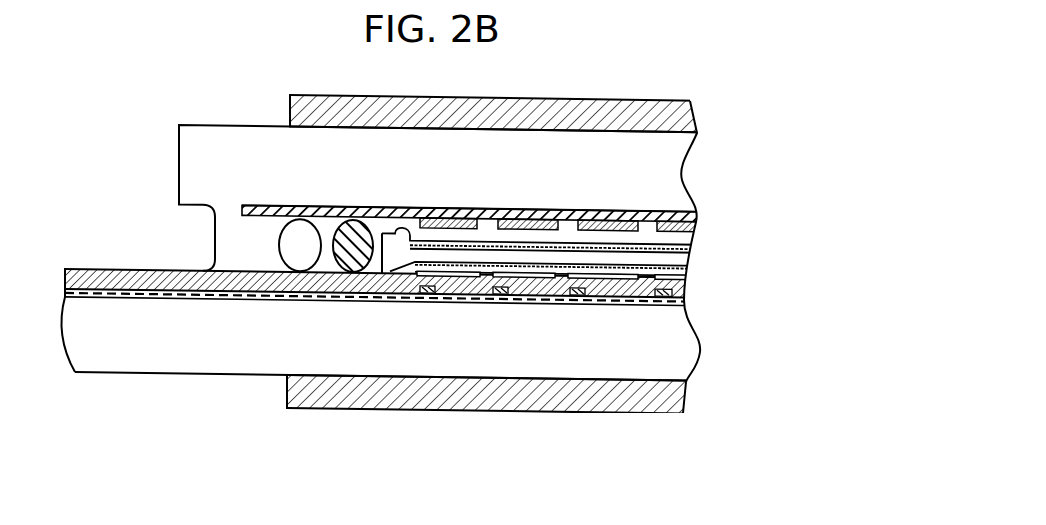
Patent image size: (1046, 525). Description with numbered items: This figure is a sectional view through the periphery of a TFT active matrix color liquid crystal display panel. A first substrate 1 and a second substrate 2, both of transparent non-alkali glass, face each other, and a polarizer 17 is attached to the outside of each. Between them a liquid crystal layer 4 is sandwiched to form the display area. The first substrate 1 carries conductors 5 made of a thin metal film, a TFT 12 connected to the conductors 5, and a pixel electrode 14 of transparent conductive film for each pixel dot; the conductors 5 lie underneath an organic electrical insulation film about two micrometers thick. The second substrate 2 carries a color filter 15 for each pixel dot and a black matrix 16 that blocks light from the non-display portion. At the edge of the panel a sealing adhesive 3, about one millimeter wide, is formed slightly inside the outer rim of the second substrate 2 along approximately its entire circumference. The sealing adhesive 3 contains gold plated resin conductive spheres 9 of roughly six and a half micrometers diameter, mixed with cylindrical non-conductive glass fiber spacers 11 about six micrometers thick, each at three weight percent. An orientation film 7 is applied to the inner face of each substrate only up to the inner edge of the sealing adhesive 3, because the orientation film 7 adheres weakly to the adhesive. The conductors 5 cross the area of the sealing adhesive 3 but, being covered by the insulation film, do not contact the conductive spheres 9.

The first substrate 1 is at (665, 355).
The second substrate 2 is at (213, 150).
The sealing adhesive 3 is at (325, 263).
The liquid crystal layer 4 is at (680, 255).
The conductor 5 is at (170, 300).
The orientation film 7 is at (693, 245).
The conductive sphere 9 is at (352, 256).
The glass fiber spacer 11 is at (303, 247).
The TFT 12 is at (682, 295).
The pixel electrode 14 is at (462, 297).
The color filter 15 is at (693, 228).
The black matrix 16 is at (655, 212).
The polarizer 17 is at (690, 113).